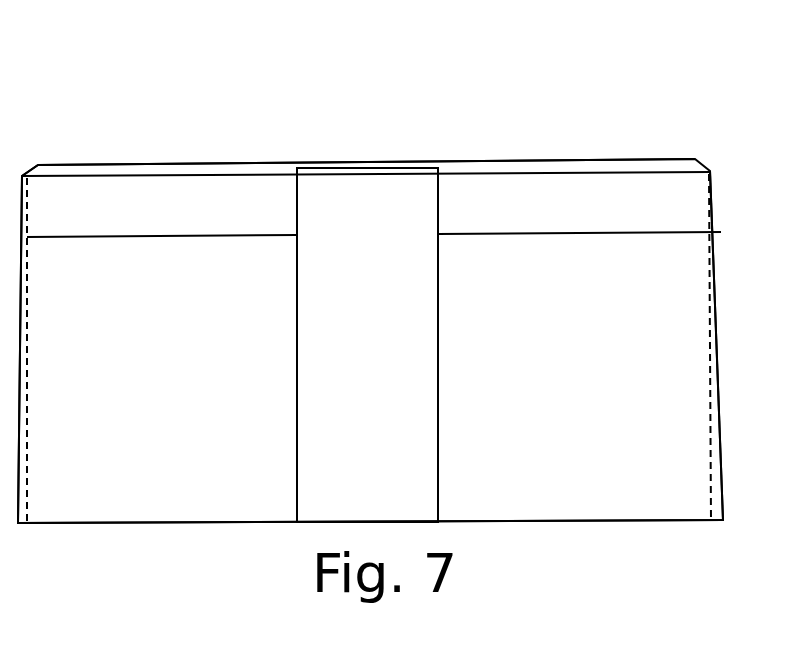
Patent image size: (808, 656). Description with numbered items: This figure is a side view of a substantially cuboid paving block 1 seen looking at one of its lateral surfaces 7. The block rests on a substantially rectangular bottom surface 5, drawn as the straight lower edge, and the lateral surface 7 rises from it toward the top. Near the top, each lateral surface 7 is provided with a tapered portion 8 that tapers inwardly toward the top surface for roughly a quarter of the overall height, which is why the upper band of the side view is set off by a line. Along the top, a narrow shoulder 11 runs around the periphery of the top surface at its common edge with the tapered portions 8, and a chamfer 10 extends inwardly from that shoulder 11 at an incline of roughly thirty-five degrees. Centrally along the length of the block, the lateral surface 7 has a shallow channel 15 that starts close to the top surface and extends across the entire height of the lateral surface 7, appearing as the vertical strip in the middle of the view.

The paving block 1 is at (463, 120).
The bottom surface 5 is at (562, 523).
The lateral surface 7 is at (675, 412).
The tapered portion 8 is at (625, 202).
The chamfer 10 is at (162, 167).
The shoulder 11 is at (22, 175).
The channel 15 is at (325, 198).